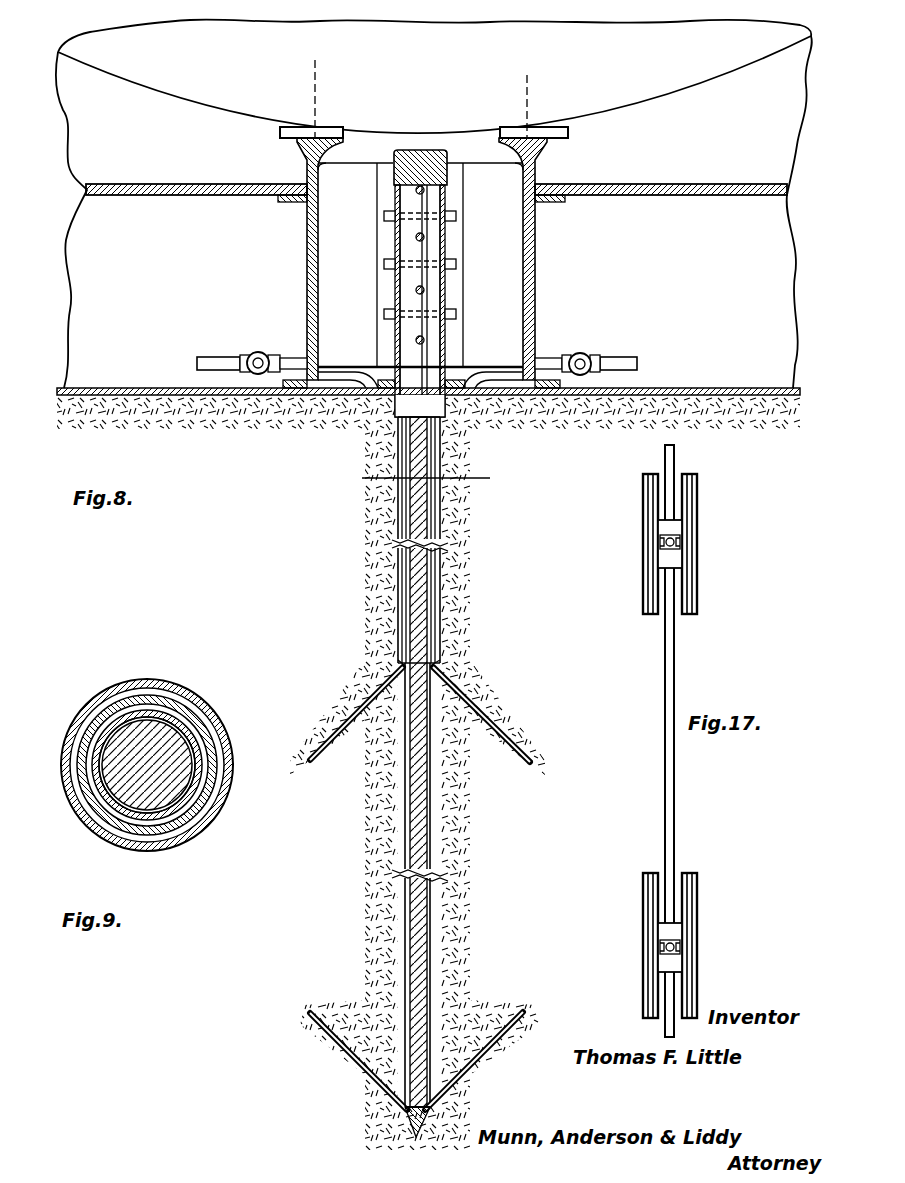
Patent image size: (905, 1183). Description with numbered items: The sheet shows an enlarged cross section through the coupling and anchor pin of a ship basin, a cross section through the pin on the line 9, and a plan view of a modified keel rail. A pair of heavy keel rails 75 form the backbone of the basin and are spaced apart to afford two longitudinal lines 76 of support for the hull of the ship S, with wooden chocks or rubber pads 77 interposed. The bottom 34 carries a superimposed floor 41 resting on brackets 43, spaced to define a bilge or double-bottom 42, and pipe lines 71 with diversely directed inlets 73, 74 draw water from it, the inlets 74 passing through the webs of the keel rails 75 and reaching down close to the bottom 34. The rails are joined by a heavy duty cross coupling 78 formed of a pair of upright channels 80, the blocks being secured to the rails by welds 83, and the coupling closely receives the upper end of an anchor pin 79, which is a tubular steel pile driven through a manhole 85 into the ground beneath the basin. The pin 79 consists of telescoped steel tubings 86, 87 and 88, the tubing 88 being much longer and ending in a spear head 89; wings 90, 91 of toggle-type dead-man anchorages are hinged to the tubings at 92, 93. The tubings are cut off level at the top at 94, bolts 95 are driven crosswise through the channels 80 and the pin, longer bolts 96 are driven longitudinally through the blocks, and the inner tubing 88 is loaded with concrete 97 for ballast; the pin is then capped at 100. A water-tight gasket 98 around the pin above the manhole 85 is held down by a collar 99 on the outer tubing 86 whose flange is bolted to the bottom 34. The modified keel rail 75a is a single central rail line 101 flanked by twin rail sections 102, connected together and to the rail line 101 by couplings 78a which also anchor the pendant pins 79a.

In FIG. 8, the ship S is at (735, 55).
In FIG. 8, the floor 41 is at (680, 184).
In FIG. 8, the bilge or double-bottom 42 is at (716, 210).
In FIG. 8, the brackets 43 is at (284, 202).
In FIG. 8, the longitudinal lines of support 76 is at (315, 67).
In FIG. 8, the wooden chocks or rubber pads 77 is at (280, 132).
In FIG. 8, the welds 83 is at (326, 160).
In FIG. 8, the keel rails 75 is at (307, 244).
In FIG. 8, the cross couplings 78 is at (512, 285).
In FIG. 8, the level top cut of tubings 94 is at (420, 150).
In FIG. 8, the cap 100 is at (393, 150).
In FIG. 8, the upright channels 80 is at (395, 240).
In FIG. 8, the longer bolts 96 is at (445, 192).
In FIG. 8, the bolts 95 is at (384, 216).
In FIG. 8, the inlets 73 is at (208, 357).
In FIG. 8, the pipe lines 71 is at (256, 352).
In FIG. 8, the inlets 74 is at (332, 368).
In FIG. 8, the bottom 34 is at (600, 397).
In FIG. 8, the collar 99 is at (460, 400).
In FIG. 8, the water-tight gasket 98 is at (388, 405).
In FIG. 8, the manhole 85 is at (400, 419).
In FIG. 8, the section line 9— 9 is at (500, 480).
In FIG. 8, the anchor pin 79 is at (374, 590).
In FIG. 9, the anchor pin 79 is at (219, 704).
In FIG. 8, the outer tubing 86 is at (398, 614).
In FIG. 9, the outer tubing 86 is at (205, 730).
In FIG. 8, the tubing 87 is at (402, 632).
In FIG. 9, the tubing 87 is at (200, 754).
In FIG. 8, the inner tubing 88 is at (406, 652).
In FIG. 9, the inner tubing 88 is at (196, 772).
In FIG. 8, the concrete 97 is at (405, 767).
In FIG. 9, the concrete 97 is at (192, 787).
In FIG. 8, the wings 90 is at (360, 714).
In FIG. 8, the hinge 92 is at (435, 674).
In FIG. 8, the wings 91 is at (328, 1030).
In FIG. 8, the hinge 93 is at (405, 1112).
In FIG. 8, the spear head 89 is at (410, 1128).
In FIG. 17, the central rail line 101 is at (665, 724).
In FIG. 17, the keel rail 75a is at (654, 703).
In FIG. 17, the twin rail sections 102 is at (650, 524).
In FIG. 17, the couplings 78a is at (676, 527).
In FIG. 17, the pendant pins 79a is at (680, 547).